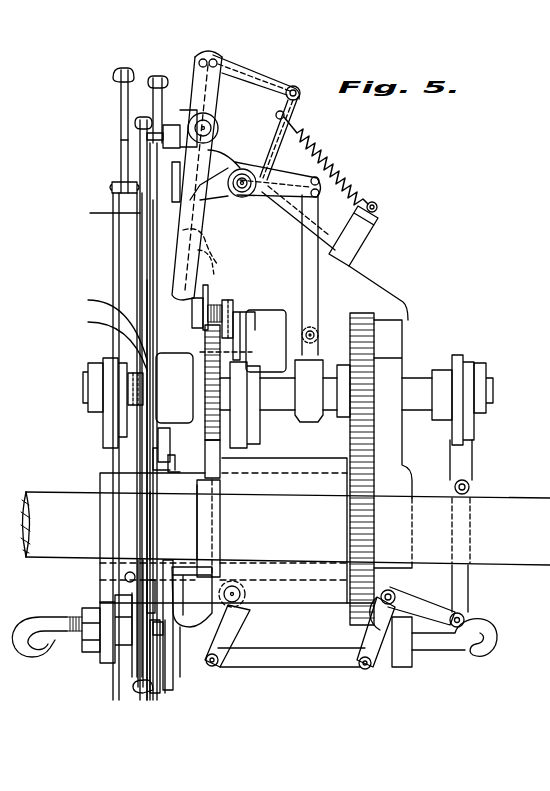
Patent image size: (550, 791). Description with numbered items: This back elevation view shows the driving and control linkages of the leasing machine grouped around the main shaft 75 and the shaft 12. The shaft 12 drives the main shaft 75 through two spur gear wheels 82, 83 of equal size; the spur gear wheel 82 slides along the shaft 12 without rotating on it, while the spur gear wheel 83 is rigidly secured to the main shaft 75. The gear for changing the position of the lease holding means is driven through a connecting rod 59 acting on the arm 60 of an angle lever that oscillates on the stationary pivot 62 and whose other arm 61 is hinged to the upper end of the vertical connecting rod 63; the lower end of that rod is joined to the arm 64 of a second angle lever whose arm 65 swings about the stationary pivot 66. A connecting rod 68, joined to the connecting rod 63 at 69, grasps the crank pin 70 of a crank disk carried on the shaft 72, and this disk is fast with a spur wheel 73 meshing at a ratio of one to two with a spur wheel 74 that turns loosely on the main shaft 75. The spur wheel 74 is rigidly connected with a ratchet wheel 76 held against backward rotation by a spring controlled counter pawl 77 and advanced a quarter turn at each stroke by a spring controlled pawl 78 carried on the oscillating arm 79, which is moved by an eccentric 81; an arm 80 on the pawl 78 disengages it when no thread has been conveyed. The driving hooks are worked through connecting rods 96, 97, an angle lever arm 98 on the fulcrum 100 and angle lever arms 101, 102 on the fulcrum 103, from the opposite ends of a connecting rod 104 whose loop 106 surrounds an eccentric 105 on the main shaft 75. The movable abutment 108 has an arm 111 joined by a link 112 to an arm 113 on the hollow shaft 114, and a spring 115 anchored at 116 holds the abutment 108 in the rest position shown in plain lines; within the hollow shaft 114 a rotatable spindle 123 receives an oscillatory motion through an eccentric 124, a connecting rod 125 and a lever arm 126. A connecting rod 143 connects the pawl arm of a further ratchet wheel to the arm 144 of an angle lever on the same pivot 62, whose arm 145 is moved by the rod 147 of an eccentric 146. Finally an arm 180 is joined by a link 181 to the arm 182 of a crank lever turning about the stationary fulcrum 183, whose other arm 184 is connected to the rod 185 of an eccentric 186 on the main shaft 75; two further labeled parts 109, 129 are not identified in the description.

The shaft 12 is at (56, 496).
The connecting rod 59 is at (141, 399).
The arm of angle lever 60 is at (147, 137).
The arm of angle lever 61 is at (99, 207).
The stationary pivot 62 is at (110, 186).
The vertical connecting rod 63 is at (113, 233).
The arm of angle lever 64 is at (133, 603).
The arm of angle lever 65 is at (130, 660).
The stationary pivot 66 is at (175, 600).
The connecting rod 68 is at (152, 528).
The connection point 69 is at (118, 572).
The crank pin 70 is at (155, 458).
The shaft 72 is at (222, 490).
The spur wheel 73 is at (222, 471).
The spur wheel 74 is at (222, 393).
The main shaft 75 is at (82, 386).
The ratchet wheel 76 is at (190, 383).
The counter pawl 77 is at (243, 360).
The pawl 78 is at (200, 330).
The oscillating arm 79 is at (236, 302).
The arm 80 is at (212, 288).
The eccentric 81 is at (250, 426).
The spur gear wheel 82 is at (376, 468).
The spur gear wheel 83 is at (380, 344).
The connecting rod 96 is at (164, 80).
The connecting rod 97 is at (165, 630).
The angle lever arm 98 is at (163, 102).
The fulcrum 100 is at (172, 130).
The angle lever arm 101 is at (152, 660).
The angle lever arm 102 is at (142, 695).
The fulcrum 103 is at (160, 688).
The connecting rod 104 is at (147, 282).
The eccentric 105 is at (101, 342).
The loop 106 is at (99, 326).
The movable abutment 108 is at (218, 262).
The threaded member 109 is at (207, 313).
The arm 111 is at (210, 105).
The link 112 is at (262, 85).
The arm 113 is at (299, 112).
The hollow shaft 114 is at (300, 175).
The spring 115 is at (338, 159).
The spring anchorage 116 is at (378, 209).
The rotatable spindle 123 is at (245, 190).
The eccentric 124 is at (308, 424).
The connecting rod 125 is at (310, 287).
The lever arm 126 is at (300, 228).
The hook 129 is at (51, 530).
The connecting rod 143 is at (114, 82).
The arm of angle lever 144 is at (120, 117).
The arm of angle lever 145 is at (128, 170).
The eccentric 146 is at (108, 428).
The eccentric rod 147 is at (115, 258).
The arm 180 is at (228, 640).
The link 181 is at (300, 650).
The arm of crank lever 182 is at (360, 648).
The stationary fulcrum 183 is at (382, 604).
The arm of crank lever 184 is at (422, 604).
The eccentric rod 185 is at (460, 586).
The eccentric 186 is at (470, 432).